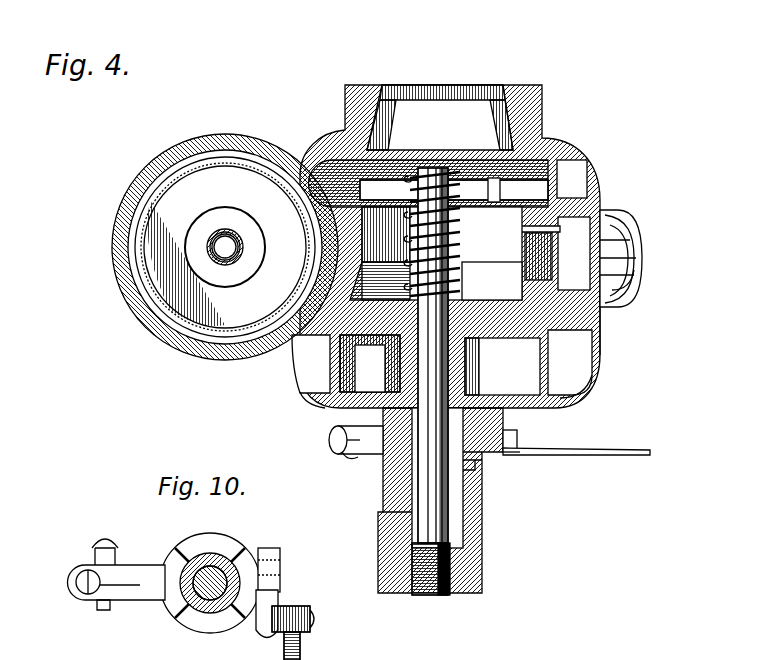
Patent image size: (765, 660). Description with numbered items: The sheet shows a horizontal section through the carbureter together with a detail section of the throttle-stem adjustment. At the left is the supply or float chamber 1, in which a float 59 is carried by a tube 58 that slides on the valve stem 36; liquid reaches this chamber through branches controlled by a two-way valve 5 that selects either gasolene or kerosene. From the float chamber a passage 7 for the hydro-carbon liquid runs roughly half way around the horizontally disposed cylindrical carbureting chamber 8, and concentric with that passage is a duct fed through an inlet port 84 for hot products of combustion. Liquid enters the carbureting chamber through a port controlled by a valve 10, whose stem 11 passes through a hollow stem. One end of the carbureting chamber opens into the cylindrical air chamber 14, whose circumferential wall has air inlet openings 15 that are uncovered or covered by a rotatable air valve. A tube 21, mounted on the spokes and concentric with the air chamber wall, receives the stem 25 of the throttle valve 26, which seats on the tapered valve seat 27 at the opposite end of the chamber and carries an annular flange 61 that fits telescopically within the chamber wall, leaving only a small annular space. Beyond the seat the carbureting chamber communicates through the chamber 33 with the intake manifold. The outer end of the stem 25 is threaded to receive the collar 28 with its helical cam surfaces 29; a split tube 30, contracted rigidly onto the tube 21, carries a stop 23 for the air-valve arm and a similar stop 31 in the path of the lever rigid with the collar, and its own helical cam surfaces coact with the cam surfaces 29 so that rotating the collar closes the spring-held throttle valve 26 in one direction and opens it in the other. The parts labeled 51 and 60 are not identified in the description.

In FIG. 4, the float chamber 1 is at (112, 238).
In FIG. 4, the two-way valve 5 is at (570, 362).
In FIG. 4, the passage 7 is at (615, 322).
In FIG. 4, the carbureting chamber 8 is at (436, 253).
In FIG. 4, the valve 10 is at (576, 435).
In FIG. 4, the valve stem 11 is at (370, 363).
In FIG. 4, the air chamber 14 is at (502, 366).
In FIG. 4, the air inlet openings 15 is at (437, 398).
In FIG. 10, the tube 21 is at (198, 553).
In FIG. 4, the stop 23 is at (372, 448).
In FIG. 10, the stop 23 is at (140, 592).
In FIG. 4, the valve stem 25 is at (432, 595).
In FIG. 10, the valve stem 25 is at (215, 580).
In FIG. 4, the throttle valve 26 is at (440, 117).
In FIG. 4, the valve seat 27 is at (582, 160).
In FIG. 10, the collar 28 is at (252, 633).
In FIG. 4, the helical cam surfaces 29 is at (482, 528).
In FIG. 4, the split tube 30 is at (482, 484).
In FIG. 10, the split tube 30 is at (188, 622).
In FIG. 4, the stop 31 is at (462, 276).
In FIG. 10, the stop 31 is at (255, 625).
In FIG. 4, the chamber 33 is at (405, 165).
In FIG. 4, the valve stem 36 is at (230, 240).
In FIG. 4, the passage 51 is at (311, 364).
In FIG. 4, the tube 58 is at (243, 240).
In FIG. 4, the float 59 is at (250, 253).
In FIG. 4, the key 60 is at (478, 185).
In FIG. 4, the annular flange 61 is at (642, 232).
In FIG. 4, the inlet port 84 is at (644, 274).